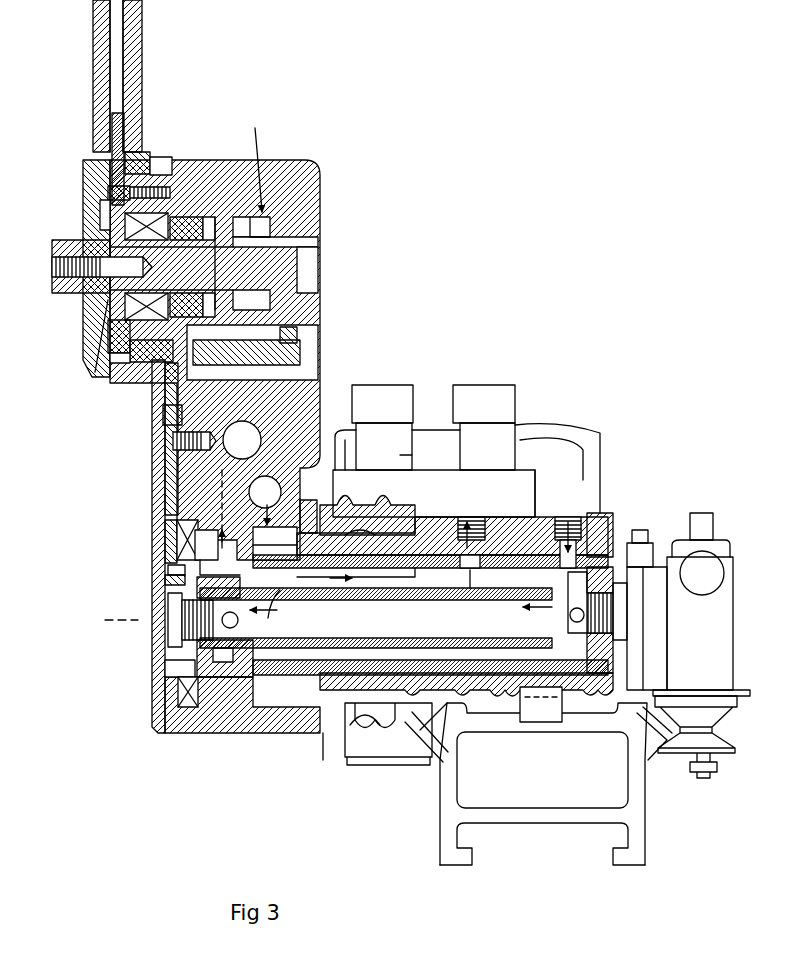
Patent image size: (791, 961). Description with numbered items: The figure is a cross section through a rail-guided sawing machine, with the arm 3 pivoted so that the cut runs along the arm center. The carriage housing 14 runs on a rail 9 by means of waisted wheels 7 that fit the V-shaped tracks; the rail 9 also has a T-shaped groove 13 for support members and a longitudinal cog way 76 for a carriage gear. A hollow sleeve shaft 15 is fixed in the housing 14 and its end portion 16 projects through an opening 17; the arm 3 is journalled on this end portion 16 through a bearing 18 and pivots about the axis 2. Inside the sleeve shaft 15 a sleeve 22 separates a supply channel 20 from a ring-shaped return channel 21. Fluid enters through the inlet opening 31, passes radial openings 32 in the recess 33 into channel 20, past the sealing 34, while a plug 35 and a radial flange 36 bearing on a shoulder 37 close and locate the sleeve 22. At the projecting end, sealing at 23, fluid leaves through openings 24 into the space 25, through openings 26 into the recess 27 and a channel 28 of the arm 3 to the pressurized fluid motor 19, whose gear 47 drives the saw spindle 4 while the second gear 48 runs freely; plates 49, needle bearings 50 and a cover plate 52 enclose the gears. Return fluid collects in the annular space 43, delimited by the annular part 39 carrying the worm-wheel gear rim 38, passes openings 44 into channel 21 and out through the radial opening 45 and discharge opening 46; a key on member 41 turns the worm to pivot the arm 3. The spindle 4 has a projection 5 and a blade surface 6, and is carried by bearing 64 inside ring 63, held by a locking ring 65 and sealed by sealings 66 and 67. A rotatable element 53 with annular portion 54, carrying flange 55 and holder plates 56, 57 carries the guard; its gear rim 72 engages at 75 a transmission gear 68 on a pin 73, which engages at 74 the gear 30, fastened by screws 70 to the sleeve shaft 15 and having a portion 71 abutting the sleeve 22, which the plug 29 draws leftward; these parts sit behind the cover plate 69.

The pivot axis 2 is at (108, 622).
The arm 3 is at (322, 300).
The saw spindle 4 is at (282, 262).
The projection 5 is at (62, 288).
The surface 6 is at (88, 216).
The wheels 7 is at (717, 715).
The rail 9 is at (640, 782).
The T-shaped groove 13 is at (478, 832).
The housing 14 is at (505, 517).
The sleeve shaft 15 is at (360, 590).
The end portion 16 is at (245, 680).
The opening 17 is at (343, 703).
The bearing 18 is at (178, 542).
The pressurized fluid motor 19 is at (259, 159).
The channel 20 is at (405, 650).
The second channel 21 is at (432, 568).
The sleeve 22 is at (398, 600).
The sealing location 23 is at (289, 610).
The openings 24 is at (235, 610).
The space 25 is at (230, 662).
The openings 26 is at (216, 538).
The recess 27 is at (222, 680).
The channel 28 is at (236, 484).
The plug 29 is at (185, 622).
The gear 30 is at (168, 558).
The fluid inlet opening 31 is at (565, 520).
The radial openings 32 is at (577, 596).
The annular circumferential recess 33 is at (590, 555).
The sealing location 34 is at (545, 598).
The plug 35 is at (610, 612).
The radial flange 36 is at (612, 560).
The shoulder 37 is at (617, 665).
The gear rim 38 is at (395, 532).
The annular part 39 is at (314, 500).
The connection member 41 is at (390, 390).
The annular space 43 is at (270, 538).
The openings 44 is at (320, 590).
The radial opening 45 is at (470, 600).
The opening 46 is at (470, 545).
The gear 47 is at (266, 222).
The second gear 48 is at (298, 343).
The plates 49 is at (238, 217).
The needle bearings 50 is at (300, 243).
The cover plate 52 is at (318, 175).
The element 53 is at (130, 365).
The annular portion 54 is at (145, 158).
The carrying flange 55 is at (118, 115).
The holder plate 56 is at (100, 58).
The holder plate 57 is at (132, 26).
The ring 63 is at (112, 192).
The bearing 64 is at (105, 305).
The locking ring 65 is at (180, 240).
The sealing 66 is at (185, 302).
The sealing 67 is at (104, 226).
The transmission means 68 is at (165, 415).
The cover plate 69 is at (155, 733).
The screws 70 is at (172, 670).
The portion 71 is at (178, 600).
The gear rim 72 is at (172, 170).
The pin 73 is at (170, 444).
The engagement area 74 is at (170, 530).
The engagement area 75 is at (160, 380).
The cog way 76 is at (530, 705).